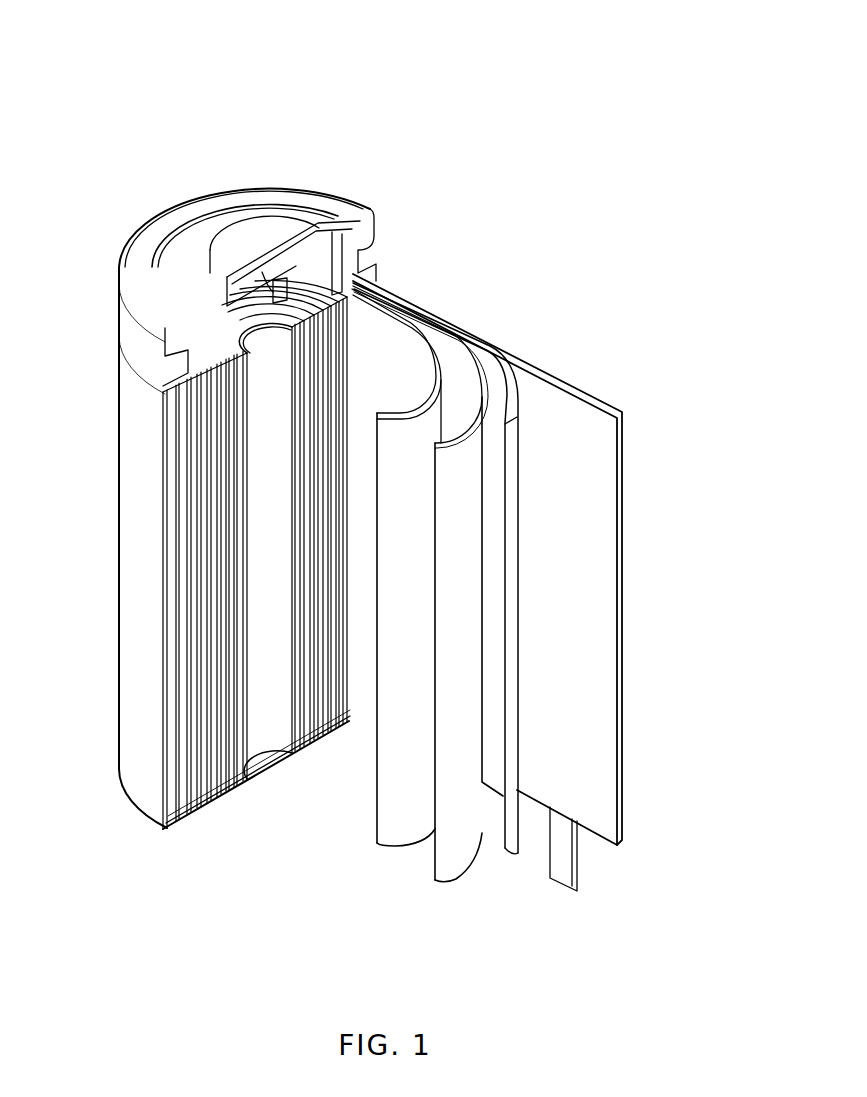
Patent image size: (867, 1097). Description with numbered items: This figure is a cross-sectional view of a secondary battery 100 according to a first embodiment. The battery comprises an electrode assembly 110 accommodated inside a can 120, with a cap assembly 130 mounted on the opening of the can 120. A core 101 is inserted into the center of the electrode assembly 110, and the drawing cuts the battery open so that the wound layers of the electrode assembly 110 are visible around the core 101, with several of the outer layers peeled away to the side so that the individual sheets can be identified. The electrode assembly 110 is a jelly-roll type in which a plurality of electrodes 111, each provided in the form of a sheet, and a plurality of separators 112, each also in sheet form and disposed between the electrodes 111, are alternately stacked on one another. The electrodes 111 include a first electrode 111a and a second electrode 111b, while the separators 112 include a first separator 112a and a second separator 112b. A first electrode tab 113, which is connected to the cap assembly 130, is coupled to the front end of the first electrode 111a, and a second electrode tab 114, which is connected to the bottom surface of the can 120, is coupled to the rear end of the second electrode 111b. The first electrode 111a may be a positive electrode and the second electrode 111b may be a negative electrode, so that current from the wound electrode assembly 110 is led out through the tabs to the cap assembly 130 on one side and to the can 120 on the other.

The secondary battery 100 is at (452, 72).
The electrode assembly 110 is at (425, 545).
The electrodes 111 is at (441, 531).
The first electrode 111a is at (402, 327).
The second electrode 111b is at (470, 337).
The separators 112 is at (520, 569).
The first separator 112a is at (480, 387).
The second separator 112b is at (520, 591).
The first electrode tab 113 is at (282, 297).
The second electrode tab 114 is at (563, 877).
The can 120 is at (133, 553).
The cap assembly 130 is at (250, 213).
The core 101 is at (270, 736).